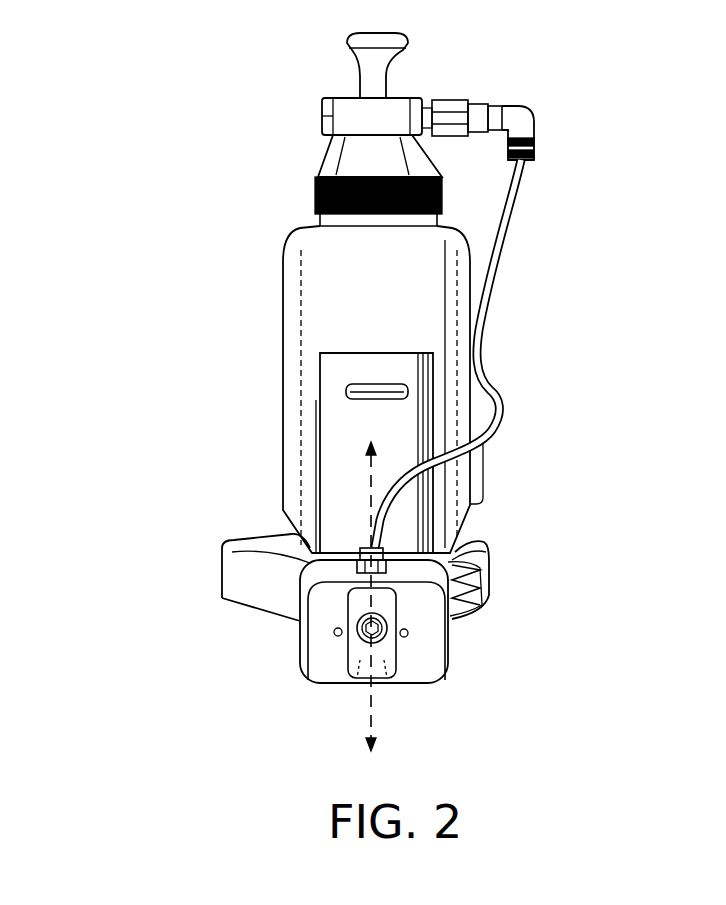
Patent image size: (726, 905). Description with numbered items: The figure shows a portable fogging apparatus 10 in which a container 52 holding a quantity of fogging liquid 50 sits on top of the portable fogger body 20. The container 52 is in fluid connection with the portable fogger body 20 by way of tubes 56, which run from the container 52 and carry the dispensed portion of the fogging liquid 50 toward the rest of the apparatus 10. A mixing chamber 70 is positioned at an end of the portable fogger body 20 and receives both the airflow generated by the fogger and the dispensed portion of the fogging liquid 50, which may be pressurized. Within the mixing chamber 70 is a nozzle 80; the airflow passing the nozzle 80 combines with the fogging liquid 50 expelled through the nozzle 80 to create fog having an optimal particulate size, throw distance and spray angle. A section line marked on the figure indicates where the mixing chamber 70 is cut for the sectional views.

The apparatus 10 is at (405, 392).
The portable fogger body 20 is at (243, 577).
The fogging liquid 50 is at (391, 318).
The container 52 is at (283, 345).
The tubes 56 is at (500, 404).
The mixing chamber 70 is at (470, 573).
The nozzle 80 is at (397, 629).